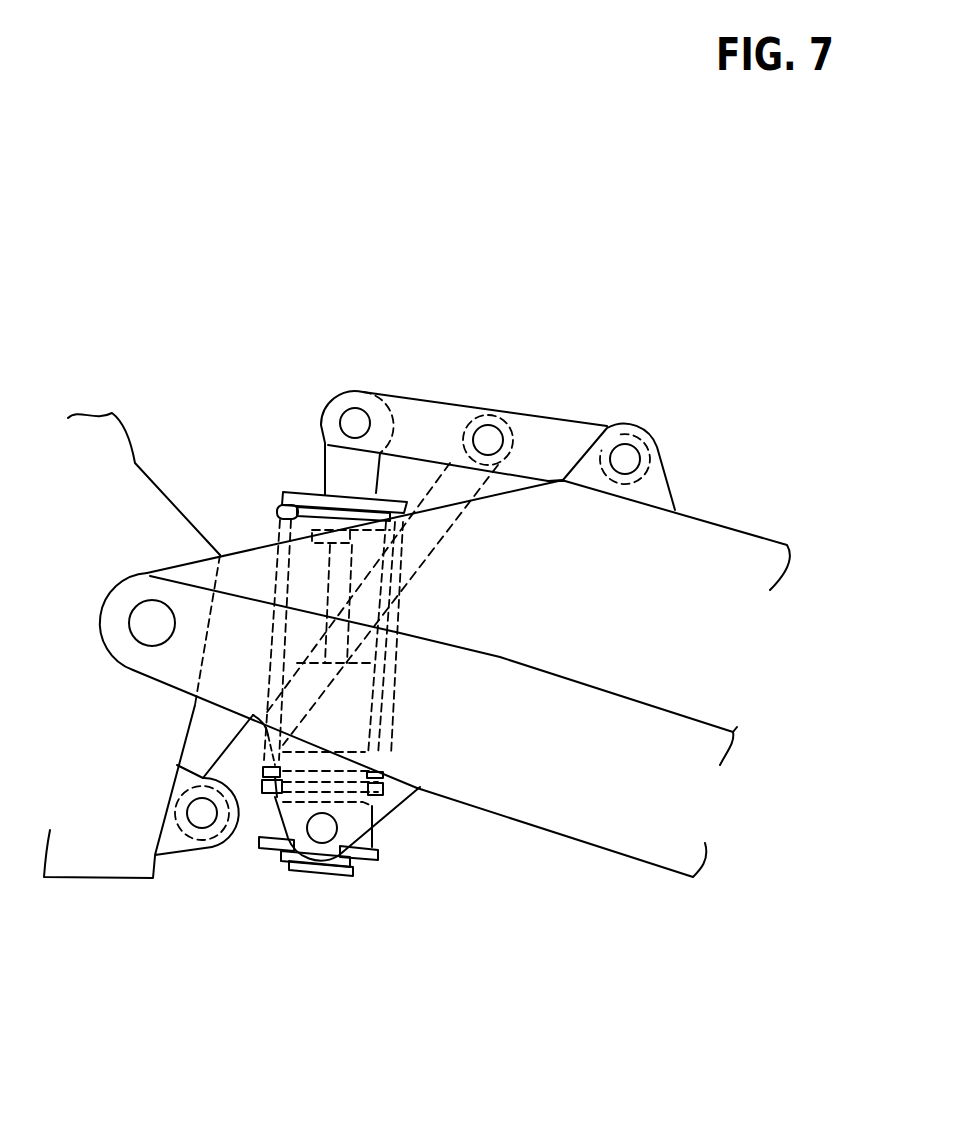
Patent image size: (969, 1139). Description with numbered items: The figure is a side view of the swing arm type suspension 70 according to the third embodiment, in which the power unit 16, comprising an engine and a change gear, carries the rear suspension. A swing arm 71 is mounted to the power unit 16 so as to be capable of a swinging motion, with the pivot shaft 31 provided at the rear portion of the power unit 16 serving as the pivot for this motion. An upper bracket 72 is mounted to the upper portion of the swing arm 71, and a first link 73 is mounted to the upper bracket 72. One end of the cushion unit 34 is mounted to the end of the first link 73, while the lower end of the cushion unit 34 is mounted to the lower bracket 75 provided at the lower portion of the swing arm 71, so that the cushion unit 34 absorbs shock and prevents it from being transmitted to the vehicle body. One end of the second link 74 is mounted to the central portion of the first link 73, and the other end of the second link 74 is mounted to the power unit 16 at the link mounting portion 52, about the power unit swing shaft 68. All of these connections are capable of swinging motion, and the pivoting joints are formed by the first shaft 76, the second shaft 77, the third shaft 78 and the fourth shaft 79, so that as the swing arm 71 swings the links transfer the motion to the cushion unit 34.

The power unit 16 is at (135, 463).
The pivot shaft 31 is at (129, 622).
The cushion unit 34 is at (296, 493).
The link mounting portion 52 is at (175, 855).
The power unit swing shaft 68 is at (207, 833).
The swing arm type suspension 70 is at (558, 376).
The swing arm 71 is at (730, 527).
The upper bracket 72 is at (668, 480).
The first link 73 is at (421, 398).
The second link 74 is at (453, 530).
The lower bracket 75 is at (392, 798).
The first shaft 76 is at (621, 443).
The second shaft 77 is at (490, 413).
The third shaft 78 is at (348, 391).
The fourth shaft 79 is at (340, 873).